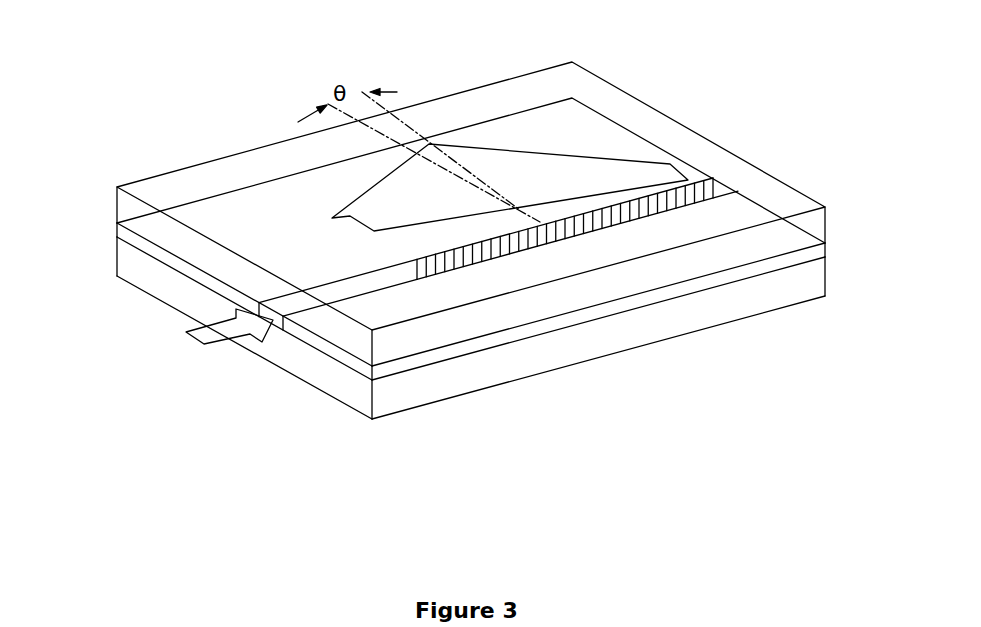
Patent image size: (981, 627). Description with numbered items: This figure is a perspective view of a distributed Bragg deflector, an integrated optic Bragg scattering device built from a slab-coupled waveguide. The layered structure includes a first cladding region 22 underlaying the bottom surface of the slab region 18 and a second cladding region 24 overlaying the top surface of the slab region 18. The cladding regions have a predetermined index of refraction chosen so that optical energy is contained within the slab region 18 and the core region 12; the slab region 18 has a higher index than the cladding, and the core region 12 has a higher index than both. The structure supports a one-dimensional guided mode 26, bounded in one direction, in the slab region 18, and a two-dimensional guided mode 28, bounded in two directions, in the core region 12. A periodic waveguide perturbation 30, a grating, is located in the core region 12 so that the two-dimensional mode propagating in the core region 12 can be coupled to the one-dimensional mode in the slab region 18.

The core region 12 is at (313, 310).
The slab region 18 is at (116, 224).
The first cladding region 22 is at (135, 290).
The second cladding region 24 is at (115, 203).
The one-dimensional guided mode 26 is at (620, 158).
The two-dimensional guided mode 28 is at (197, 338).
The periodic waveguide perturbation 30 is at (740, 184).